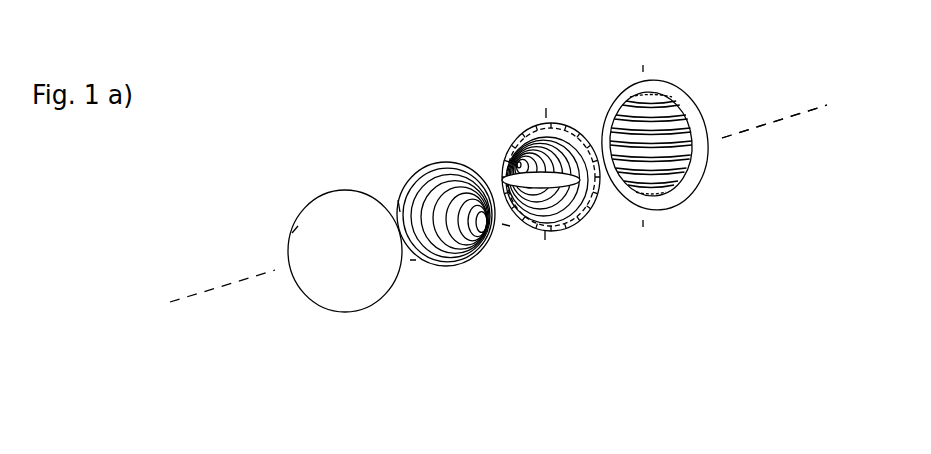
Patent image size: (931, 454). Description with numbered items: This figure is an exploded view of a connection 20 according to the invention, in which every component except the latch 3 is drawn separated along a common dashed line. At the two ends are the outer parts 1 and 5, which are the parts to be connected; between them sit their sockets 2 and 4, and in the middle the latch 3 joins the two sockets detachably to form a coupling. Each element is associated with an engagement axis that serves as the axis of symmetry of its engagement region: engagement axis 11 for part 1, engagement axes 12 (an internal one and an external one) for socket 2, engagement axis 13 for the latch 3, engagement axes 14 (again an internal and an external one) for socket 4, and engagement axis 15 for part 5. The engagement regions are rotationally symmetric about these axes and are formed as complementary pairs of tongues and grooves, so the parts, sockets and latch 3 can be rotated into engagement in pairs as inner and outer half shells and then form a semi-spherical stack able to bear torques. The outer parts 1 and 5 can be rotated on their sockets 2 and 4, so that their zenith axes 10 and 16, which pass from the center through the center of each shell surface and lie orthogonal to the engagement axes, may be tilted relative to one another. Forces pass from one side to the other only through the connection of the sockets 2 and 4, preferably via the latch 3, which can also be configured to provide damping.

The outer part 1 is at (340, 300).
The socket 2 is at (463, 260).
The latch 3 is at (478, 177).
The socket 4 is at (600, 213).
The outer part 5 is at (688, 197).
The zenith axis 10 is at (222, 287).
The engagement axis 11 is at (282, 233).
The engagement axes 12 is at (391, 195).
The engagement axis 13 is at (510, 170).
The engagement axes 14 is at (547, 103).
The engagement axis 15 is at (643, 62).
The zenith axis 16 is at (797, 115).
The connection 20 is at (273, 406).